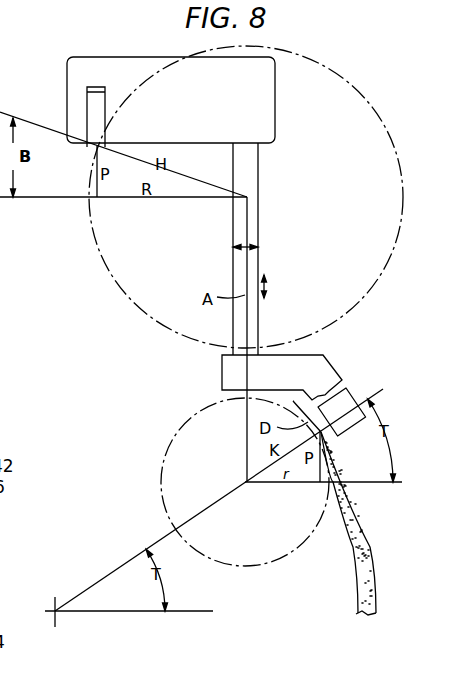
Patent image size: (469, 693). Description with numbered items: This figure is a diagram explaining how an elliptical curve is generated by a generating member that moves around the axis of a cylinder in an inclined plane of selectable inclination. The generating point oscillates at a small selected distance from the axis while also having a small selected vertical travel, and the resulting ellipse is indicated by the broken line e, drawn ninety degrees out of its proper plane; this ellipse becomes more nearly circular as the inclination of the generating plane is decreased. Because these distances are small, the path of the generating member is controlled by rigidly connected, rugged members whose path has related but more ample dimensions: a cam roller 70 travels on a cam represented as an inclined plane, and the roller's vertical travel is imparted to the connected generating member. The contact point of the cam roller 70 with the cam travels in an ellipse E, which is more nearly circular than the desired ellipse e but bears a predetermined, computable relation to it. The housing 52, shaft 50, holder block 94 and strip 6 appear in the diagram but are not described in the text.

The housing 52 is at (193, 103).
The cam roller 70 is at (88, 102).
The shaft 50 is at (250, 178).
The cutter holder block 94 is at (322, 368).
The strip 6 is at (368, 542).
The ellipse of roller contact point E is at (156, 321).
The generated ellipse e is at (257, 560).